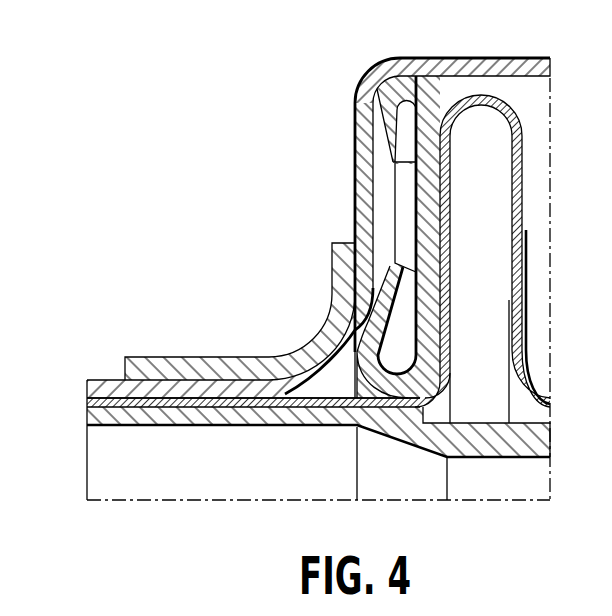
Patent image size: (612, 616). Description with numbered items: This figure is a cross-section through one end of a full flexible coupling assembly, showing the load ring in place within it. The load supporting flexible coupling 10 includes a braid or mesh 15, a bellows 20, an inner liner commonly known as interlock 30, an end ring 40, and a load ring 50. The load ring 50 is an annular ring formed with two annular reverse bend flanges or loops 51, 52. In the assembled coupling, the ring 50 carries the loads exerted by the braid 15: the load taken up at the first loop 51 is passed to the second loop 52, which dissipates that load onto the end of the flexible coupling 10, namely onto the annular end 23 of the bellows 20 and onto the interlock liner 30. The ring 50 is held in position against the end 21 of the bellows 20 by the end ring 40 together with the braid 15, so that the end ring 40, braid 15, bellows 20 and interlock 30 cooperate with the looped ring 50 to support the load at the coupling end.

The load supporting flexible coupling 10 is at (378, 50).
The braid 15 is at (536, 57).
The bellows 20 is at (484, 98).
The end of bellows 21 is at (452, 268).
The annular end of bellows 23 is at (316, 407).
The interlock 30 is at (87, 415).
The end ring 40 is at (190, 357).
The load ring 50 is at (396, 215).
The reverse bend loop 51 is at (373, 105).
The reverse bend loop 52 is at (332, 346).